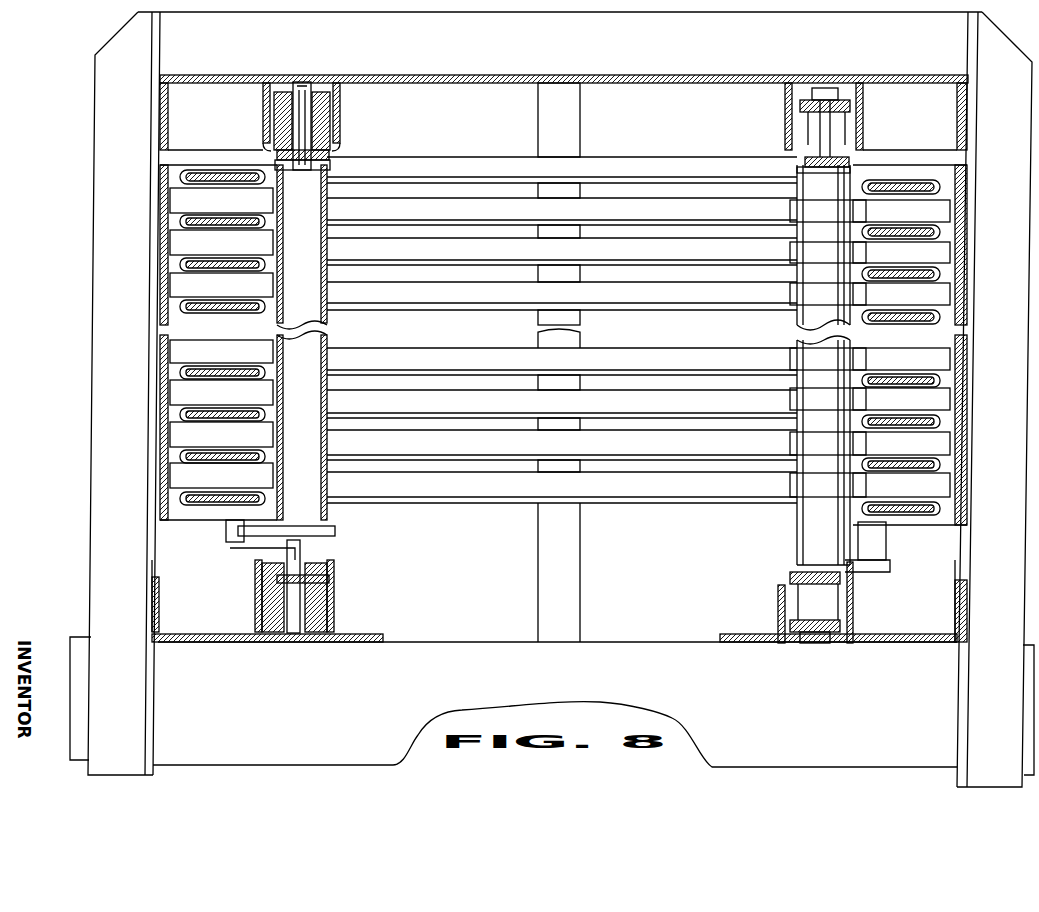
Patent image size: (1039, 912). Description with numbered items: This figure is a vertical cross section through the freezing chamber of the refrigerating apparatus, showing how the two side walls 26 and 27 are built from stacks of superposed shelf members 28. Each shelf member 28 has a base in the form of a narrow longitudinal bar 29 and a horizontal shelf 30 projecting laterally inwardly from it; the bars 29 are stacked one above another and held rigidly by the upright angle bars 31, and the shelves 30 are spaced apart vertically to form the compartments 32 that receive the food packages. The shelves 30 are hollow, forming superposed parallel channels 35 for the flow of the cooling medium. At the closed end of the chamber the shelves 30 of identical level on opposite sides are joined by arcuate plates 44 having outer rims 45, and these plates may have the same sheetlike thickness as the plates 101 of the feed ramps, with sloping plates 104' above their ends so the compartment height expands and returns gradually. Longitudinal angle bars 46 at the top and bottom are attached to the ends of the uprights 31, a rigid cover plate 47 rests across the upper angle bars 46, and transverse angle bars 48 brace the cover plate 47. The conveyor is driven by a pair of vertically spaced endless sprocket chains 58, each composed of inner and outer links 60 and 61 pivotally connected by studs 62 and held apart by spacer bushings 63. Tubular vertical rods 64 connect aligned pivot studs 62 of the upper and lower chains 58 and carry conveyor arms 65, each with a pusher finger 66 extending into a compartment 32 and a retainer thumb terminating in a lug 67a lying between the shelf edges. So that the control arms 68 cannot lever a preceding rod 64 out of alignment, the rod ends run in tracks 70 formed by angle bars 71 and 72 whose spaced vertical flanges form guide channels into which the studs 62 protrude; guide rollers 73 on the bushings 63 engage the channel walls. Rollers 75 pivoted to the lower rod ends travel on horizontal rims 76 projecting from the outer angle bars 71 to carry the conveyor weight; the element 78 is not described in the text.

The side wall 26 is at (165, 325).
The side wall 27 is at (968, 170).
The shelf member 28 is at (165, 180).
The longitudinal strip or bar 29 is at (165, 200).
The horizontal shelf 30 is at (330, 230).
The upright angle bar 31 is at (118, 530).
The compartment 32 is at (165, 288).
The channel 35 is at (797, 190).
The arcuate plate 44 is at (495, 174).
The outer rim 45 is at (548, 174).
The longitudinal angle bar 46 is at (918, 680).
The cover plate 47 is at (594, 78).
The transverse angle bar 48 is at (775, 48).
The sprocket chain 58 is at (282, 155).
The inner link 60 is at (800, 125).
The outer link 61 is at (800, 90).
The pivot stud 62 is at (303, 88).
The spacer bushing 63 is at (274, 120).
The vertical rod 64 is at (330, 185).
The conveyor arm 65 is at (330, 205).
The pusher finger 66 is at (236, 251).
The lug 67a is at (866, 210).
The control arm 68 is at (330, 165).
The track 70 is at (342, 100).
The angle bar 71 is at (240, 85).
The angle bar 72 is at (341, 126).
The guide roller 73 is at (862, 130).
The roller 75 is at (240, 532).
The horizontal rim 76 is at (235, 560).
The washer 78 is at (330, 148).
The plate 101 is at (680, 158).
The sloping plate 104' is at (614, 348).